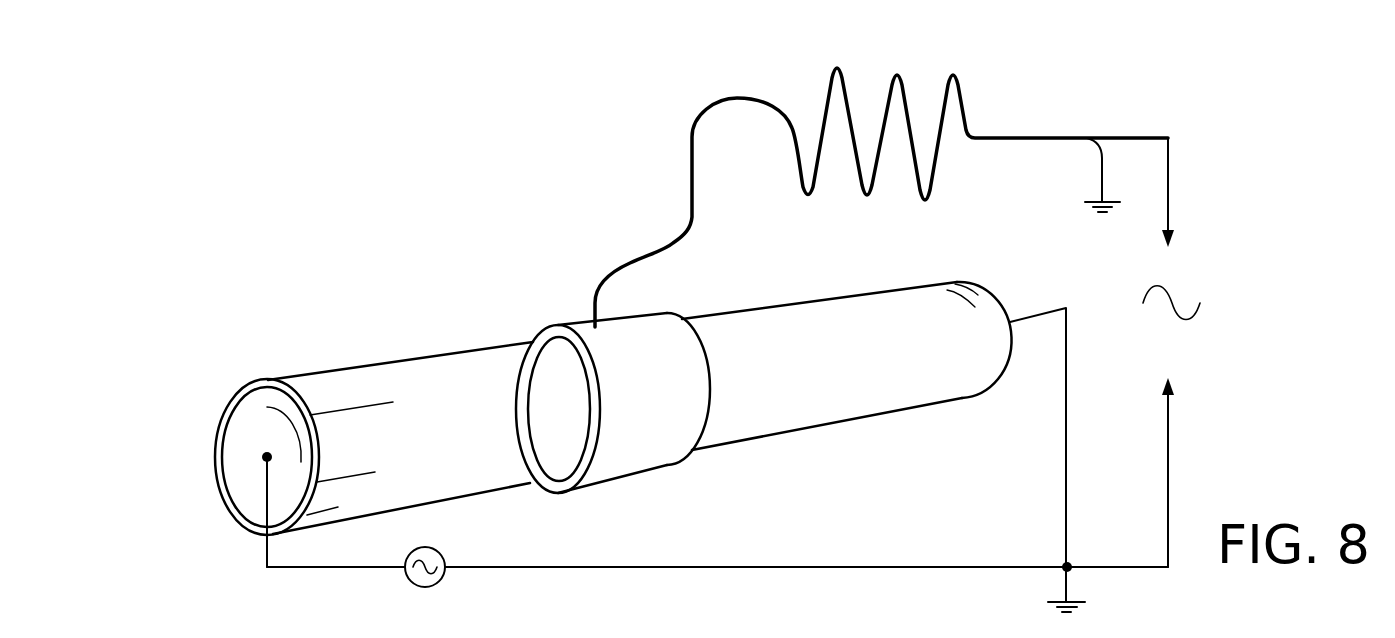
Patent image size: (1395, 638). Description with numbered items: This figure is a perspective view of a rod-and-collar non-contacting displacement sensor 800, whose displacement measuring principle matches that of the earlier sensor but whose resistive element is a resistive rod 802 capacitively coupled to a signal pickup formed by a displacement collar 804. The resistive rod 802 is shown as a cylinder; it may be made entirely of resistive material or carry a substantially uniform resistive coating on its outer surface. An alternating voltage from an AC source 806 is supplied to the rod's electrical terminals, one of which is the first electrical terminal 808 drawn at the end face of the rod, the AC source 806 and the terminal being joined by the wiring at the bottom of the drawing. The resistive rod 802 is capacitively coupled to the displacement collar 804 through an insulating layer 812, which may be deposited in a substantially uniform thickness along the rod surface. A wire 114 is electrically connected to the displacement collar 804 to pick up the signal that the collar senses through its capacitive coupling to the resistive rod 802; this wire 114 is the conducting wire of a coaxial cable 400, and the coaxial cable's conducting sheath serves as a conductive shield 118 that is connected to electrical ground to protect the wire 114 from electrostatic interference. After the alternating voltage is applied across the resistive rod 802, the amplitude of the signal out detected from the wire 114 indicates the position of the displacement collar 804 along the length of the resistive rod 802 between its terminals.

The rod-and-collar non-contacting displacement sensor 800 is at (350, 254).
The resistive rod 802 is at (243, 458).
The displacement collar 804 is at (628, 314).
The AC source 806 is at (407, 578).
The first electrical terminal 808 is at (265, 459).
The insulating layer 812 is at (240, 395).
The coaxial cable 400 is at (623, 265).
The wire 114 is at (1138, 138).
The conductive shield 118 is at (1092, 145).